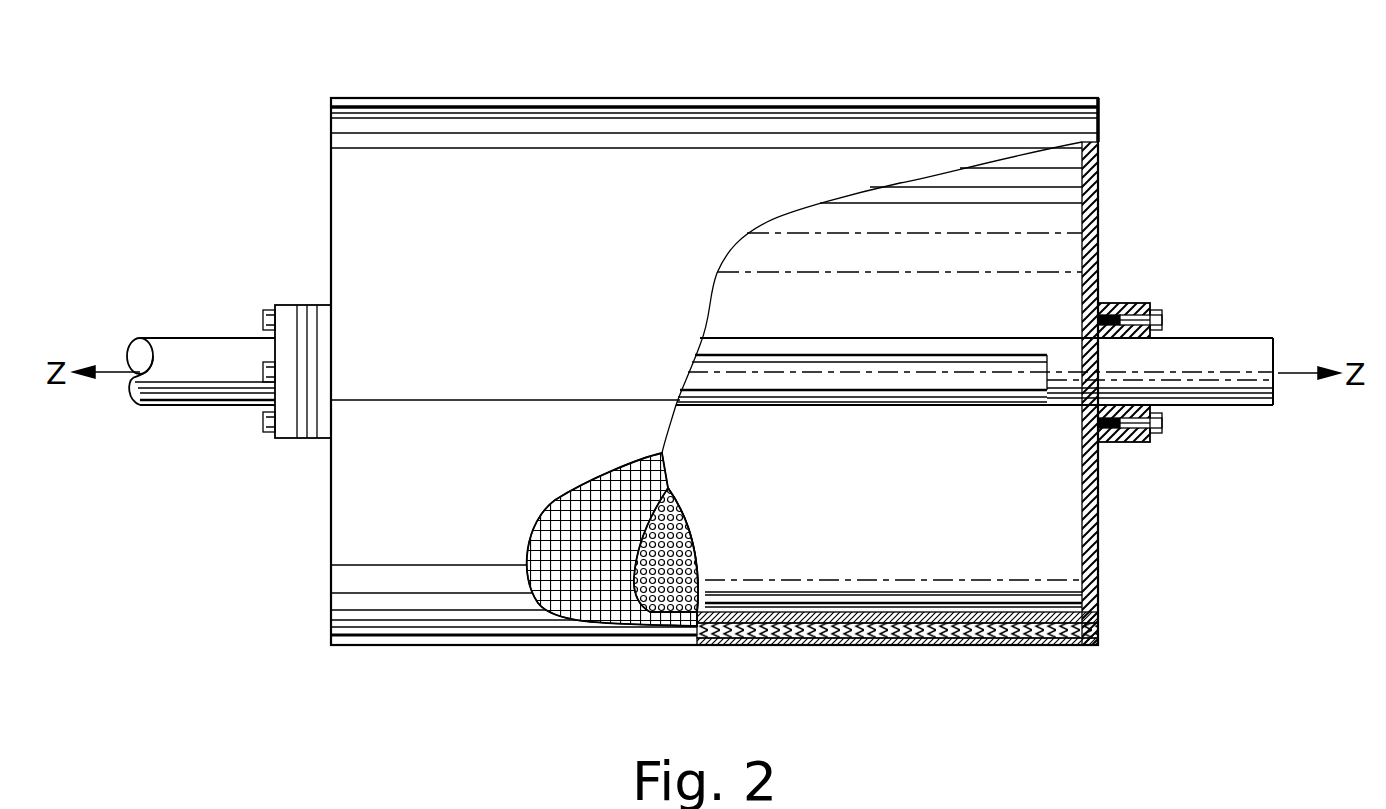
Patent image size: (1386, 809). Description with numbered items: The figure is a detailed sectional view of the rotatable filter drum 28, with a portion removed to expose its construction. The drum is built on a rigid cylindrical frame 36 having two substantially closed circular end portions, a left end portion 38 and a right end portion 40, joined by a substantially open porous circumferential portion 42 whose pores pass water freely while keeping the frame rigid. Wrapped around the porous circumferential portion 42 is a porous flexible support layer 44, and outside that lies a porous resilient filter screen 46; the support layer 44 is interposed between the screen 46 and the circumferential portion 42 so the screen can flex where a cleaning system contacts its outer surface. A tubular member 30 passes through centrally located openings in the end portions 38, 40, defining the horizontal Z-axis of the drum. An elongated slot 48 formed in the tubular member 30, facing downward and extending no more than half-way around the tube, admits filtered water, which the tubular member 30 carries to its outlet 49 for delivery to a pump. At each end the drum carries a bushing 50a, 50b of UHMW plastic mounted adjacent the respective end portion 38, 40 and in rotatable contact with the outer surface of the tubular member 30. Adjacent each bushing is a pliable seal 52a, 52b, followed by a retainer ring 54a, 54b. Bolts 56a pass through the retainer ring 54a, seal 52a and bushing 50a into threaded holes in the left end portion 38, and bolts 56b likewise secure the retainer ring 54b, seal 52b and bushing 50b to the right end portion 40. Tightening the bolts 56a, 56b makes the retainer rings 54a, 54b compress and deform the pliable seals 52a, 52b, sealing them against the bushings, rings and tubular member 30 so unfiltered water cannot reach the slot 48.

The rotatable filter drum 28 is at (1115, 700).
The tubular member 30 is at (183, 337).
The rigid cylindrical frame 36 is at (1100, 617).
The left end portion 38 is at (331, 541).
The right end portion 40 is at (1100, 527).
The porous circumferential portion 42 is at (700, 548).
The porous flexible support layer 44 is at (668, 462).
The porous resilient filter screen 46 is at (515, 178).
The elongated slot 48 is at (850, 378).
The outlet 49 is at (1278, 395).
The bushing 50a is at (317, 303).
The bushing 50b is at (1110, 303).
The pliable seal 52a is at (303, 303).
The pliable seal 52b is at (1127, 303).
The retainer ring 54a is at (283, 304).
The retainer ring 54b is at (1146, 303).
The bolts 56a is at (262, 422).
The bolts 56b is at (1168, 424).